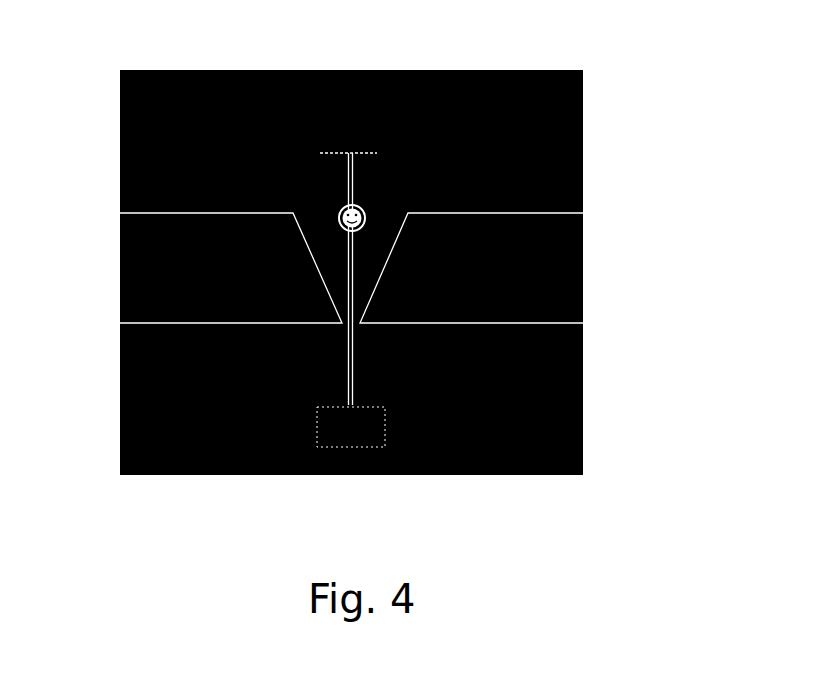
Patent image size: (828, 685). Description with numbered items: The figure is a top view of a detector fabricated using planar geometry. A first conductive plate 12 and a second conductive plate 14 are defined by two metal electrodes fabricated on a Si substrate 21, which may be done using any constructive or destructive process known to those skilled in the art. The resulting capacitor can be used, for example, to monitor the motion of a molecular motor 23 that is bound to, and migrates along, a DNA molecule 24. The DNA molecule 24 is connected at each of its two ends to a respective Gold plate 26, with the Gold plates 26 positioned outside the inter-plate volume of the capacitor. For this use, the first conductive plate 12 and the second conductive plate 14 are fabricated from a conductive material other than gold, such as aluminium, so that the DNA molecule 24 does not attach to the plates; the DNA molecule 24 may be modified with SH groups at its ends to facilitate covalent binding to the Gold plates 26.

The first conductive plate 12 is at (311, 265).
The second conductive plate 14 is at (397, 277).
The Si substrate 21 is at (176, 421).
The molecular motor 23 is at (377, 209).
The DNA molecule 24 is at (367, 375).
The Gold plate 26 is at (315, 137).